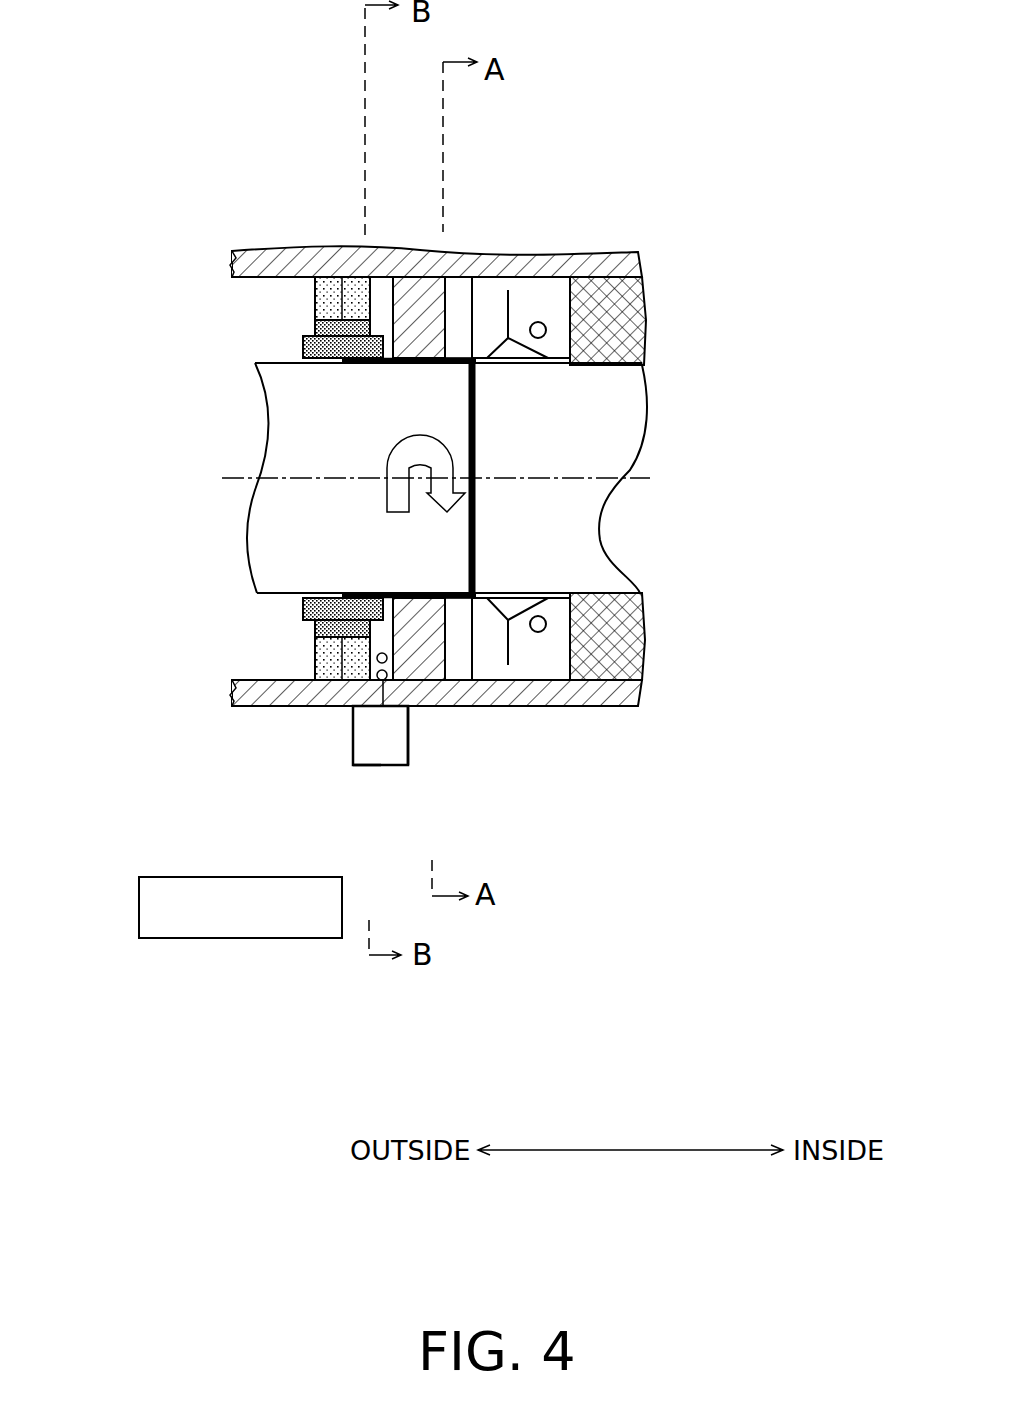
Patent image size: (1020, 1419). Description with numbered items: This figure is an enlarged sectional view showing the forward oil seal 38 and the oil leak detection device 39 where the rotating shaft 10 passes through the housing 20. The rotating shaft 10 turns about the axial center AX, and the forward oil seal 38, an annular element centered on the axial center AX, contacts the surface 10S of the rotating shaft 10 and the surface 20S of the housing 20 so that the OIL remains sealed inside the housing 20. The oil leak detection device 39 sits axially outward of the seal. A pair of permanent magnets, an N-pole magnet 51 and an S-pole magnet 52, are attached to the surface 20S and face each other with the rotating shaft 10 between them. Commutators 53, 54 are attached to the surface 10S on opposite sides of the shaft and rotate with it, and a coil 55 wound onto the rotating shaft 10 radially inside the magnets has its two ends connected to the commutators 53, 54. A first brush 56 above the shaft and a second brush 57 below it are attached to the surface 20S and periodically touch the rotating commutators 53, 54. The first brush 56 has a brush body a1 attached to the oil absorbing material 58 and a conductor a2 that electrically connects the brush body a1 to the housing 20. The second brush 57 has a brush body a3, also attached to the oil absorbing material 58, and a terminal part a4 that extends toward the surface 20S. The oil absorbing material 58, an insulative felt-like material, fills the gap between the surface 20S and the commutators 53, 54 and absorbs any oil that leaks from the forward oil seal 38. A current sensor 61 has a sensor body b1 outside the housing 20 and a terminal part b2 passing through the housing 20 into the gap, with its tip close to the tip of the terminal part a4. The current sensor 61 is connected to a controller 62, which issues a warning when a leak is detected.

The rotating shaft 10 is at (640, 412).
The surface of the rotating shaft 10S is at (263, 360).
The housing 20 is at (620, 252).
The surface of the housing 20S is at (246, 279).
The forward oil seal 38 is at (538, 290).
The oil leak detection device 39 is at (454, 288).
The N-pole magnet 51 is at (420, 292).
The S-pole magnet 52 is at (430, 668).
The commutator 53 is at (302, 342).
The commutator 54 is at (302, 610).
The coil 55 is at (468, 405).
The first brush 56 is at (322, 231).
The second brush 57 is at (303, 723).
The oil absorbing material 58 is at (313, 305).
The current sensor 61 is at (395, 800).
The controller 62 is at (139, 905).
The brush body a1 is at (326, 300).
The conductor a2 is at (345, 298).
The brush body a3 is at (330, 650).
The terminal part a4 is at (360, 652).
The sensor body b1 is at (368, 767).
The terminal part b2 is at (413, 706).
The axial center AX is at (648, 480).
The oil OIL is at (632, 320).